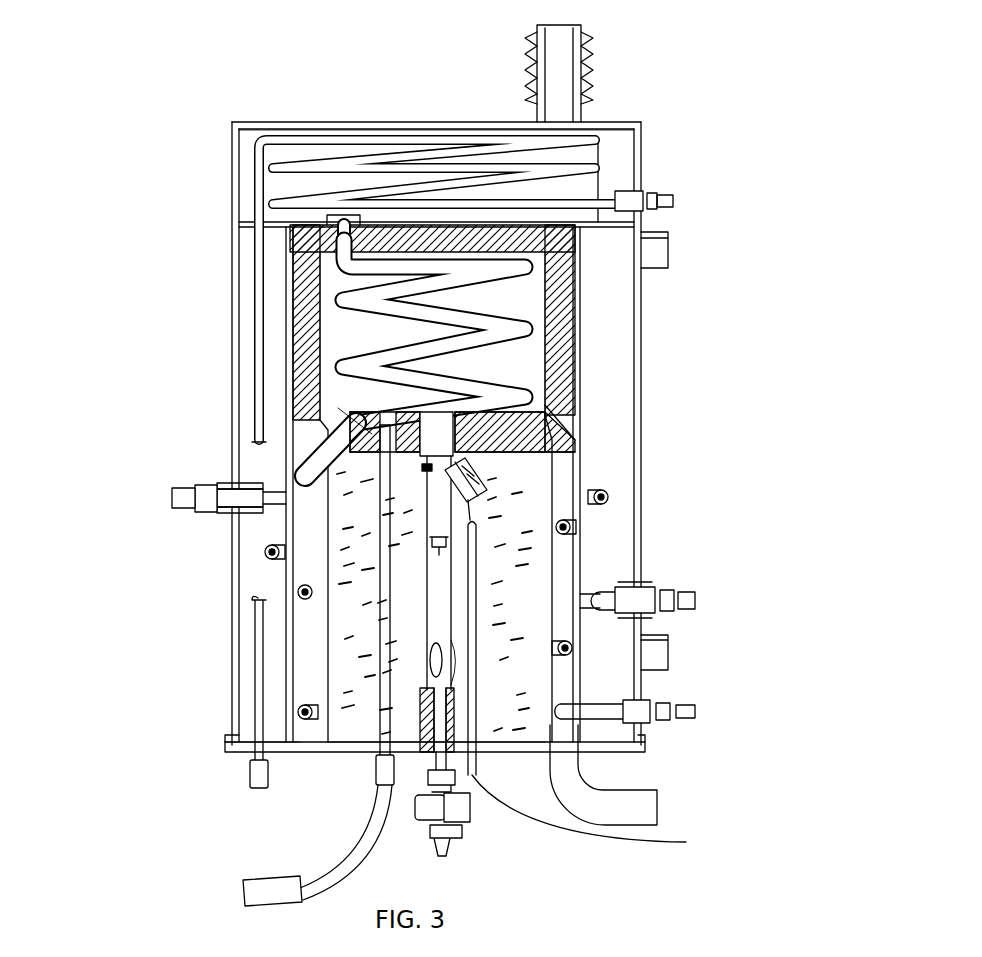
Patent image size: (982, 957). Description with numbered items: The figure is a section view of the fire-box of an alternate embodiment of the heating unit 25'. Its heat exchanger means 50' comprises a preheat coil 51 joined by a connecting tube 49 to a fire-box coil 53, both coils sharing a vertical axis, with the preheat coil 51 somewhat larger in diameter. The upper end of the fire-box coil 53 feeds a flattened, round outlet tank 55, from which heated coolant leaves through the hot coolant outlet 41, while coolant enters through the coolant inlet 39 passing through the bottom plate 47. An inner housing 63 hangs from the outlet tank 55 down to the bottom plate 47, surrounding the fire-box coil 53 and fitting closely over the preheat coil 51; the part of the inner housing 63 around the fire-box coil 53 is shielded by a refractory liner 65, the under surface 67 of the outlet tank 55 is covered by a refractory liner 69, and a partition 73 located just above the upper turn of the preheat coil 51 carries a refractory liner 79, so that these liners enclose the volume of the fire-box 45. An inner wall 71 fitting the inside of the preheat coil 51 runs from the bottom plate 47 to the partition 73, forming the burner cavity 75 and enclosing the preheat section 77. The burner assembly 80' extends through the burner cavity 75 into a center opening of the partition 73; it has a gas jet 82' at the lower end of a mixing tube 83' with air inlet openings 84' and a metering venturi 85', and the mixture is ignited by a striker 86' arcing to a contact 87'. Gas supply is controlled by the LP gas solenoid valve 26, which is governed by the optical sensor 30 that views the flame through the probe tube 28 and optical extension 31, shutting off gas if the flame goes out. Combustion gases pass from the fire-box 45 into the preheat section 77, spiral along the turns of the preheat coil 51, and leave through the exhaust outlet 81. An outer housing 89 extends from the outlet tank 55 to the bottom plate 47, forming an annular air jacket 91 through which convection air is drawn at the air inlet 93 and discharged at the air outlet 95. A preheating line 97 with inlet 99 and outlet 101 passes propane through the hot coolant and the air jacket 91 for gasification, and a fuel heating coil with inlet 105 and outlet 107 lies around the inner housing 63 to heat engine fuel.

The heating unit 25' is at (402, 406).
The preheating line 97 is at (316, 160).
The refractory liner 69 is at (425, 240).
The hot coolant outlet 41 is at (535, 70).
The outlet tank 55 is at (612, 152).
The under surface 67 is at (596, 222).
The inlet 99 is at (660, 193).
The air outlet 95 is at (668, 236).
The outer housing 89 is at (232, 172).
The heat exchanger means 50' is at (237, 250).
The fire-box 45 is at (360, 336).
The fire-box coil 53 is at (365, 366).
The annular air jacket 91 is at (246, 380).
The connecting tube 49 is at (300, 440).
The inlet 105 is at (172, 492).
The contact 87' is at (283, 509).
The metering venturi 85' is at (303, 551).
The air inlet openings 84' is at (303, 655).
The burner assembly 80' is at (302, 704).
The preheat coil 51 is at (300, 712).
The bottom plate 47 is at (236, 756).
The outlet 101 is at (258, 790).
The probe tube 28 is at (378, 766).
The optical extension 31 is at (366, 836).
The optical sensor 30 is at (243, 892).
The mixing tube 83' is at (497, 670).
The LP gas solenoid valve 26 is at (455, 822).
The gas jet 82' is at (599, 816).
The exhaust outlet 81 is at (657, 806).
The coolant inlet 39 is at (690, 720).
The air inlet 93 is at (668, 645).
The outlet 107 is at (697, 604).
The preheat section 77 is at (570, 590).
The burner cavity 75 is at (530, 560).
The striker 86' is at (581, 477).
The inner wall 71 is at (583, 445).
The partition 73 is at (560, 400).
The refractory liner 79 is at (560, 350).
The refractory liner 65 is at (575, 335).
The inner housing 63 is at (578, 300).